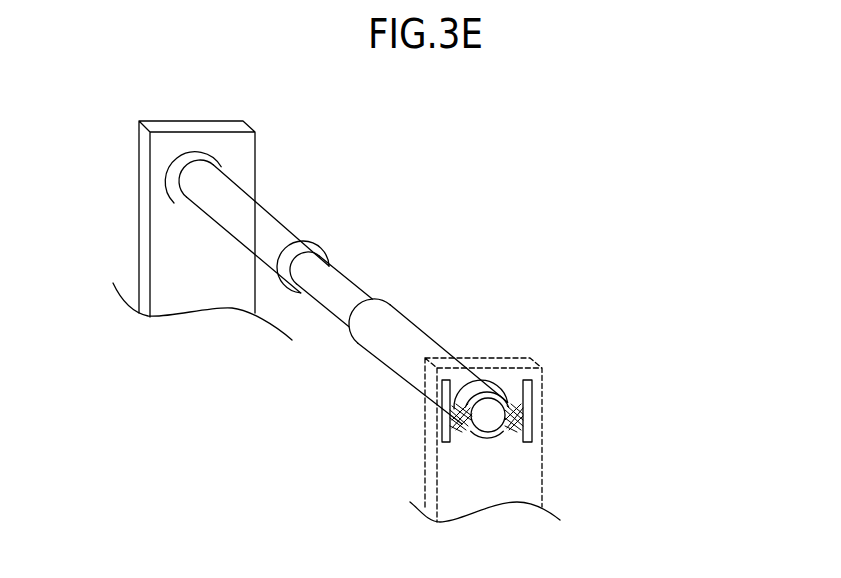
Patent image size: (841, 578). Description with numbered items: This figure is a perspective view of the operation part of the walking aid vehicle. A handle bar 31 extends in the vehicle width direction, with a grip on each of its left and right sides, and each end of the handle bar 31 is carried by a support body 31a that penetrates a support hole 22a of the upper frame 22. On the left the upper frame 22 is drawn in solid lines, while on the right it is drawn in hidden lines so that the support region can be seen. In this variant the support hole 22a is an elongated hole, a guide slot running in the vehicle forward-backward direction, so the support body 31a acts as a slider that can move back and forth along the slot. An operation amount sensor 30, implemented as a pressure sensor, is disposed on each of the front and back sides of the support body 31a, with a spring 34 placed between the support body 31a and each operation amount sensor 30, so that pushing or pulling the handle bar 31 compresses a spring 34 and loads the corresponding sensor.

The upper frame 22 is at (145, 142).
The support hole 22a is at (467, 440).
The operation amount sensor 30 is at (450, 422).
The handle bar 31 is at (328, 277).
The support body 31a is at (503, 435).
The spring 34 is at (453, 382).